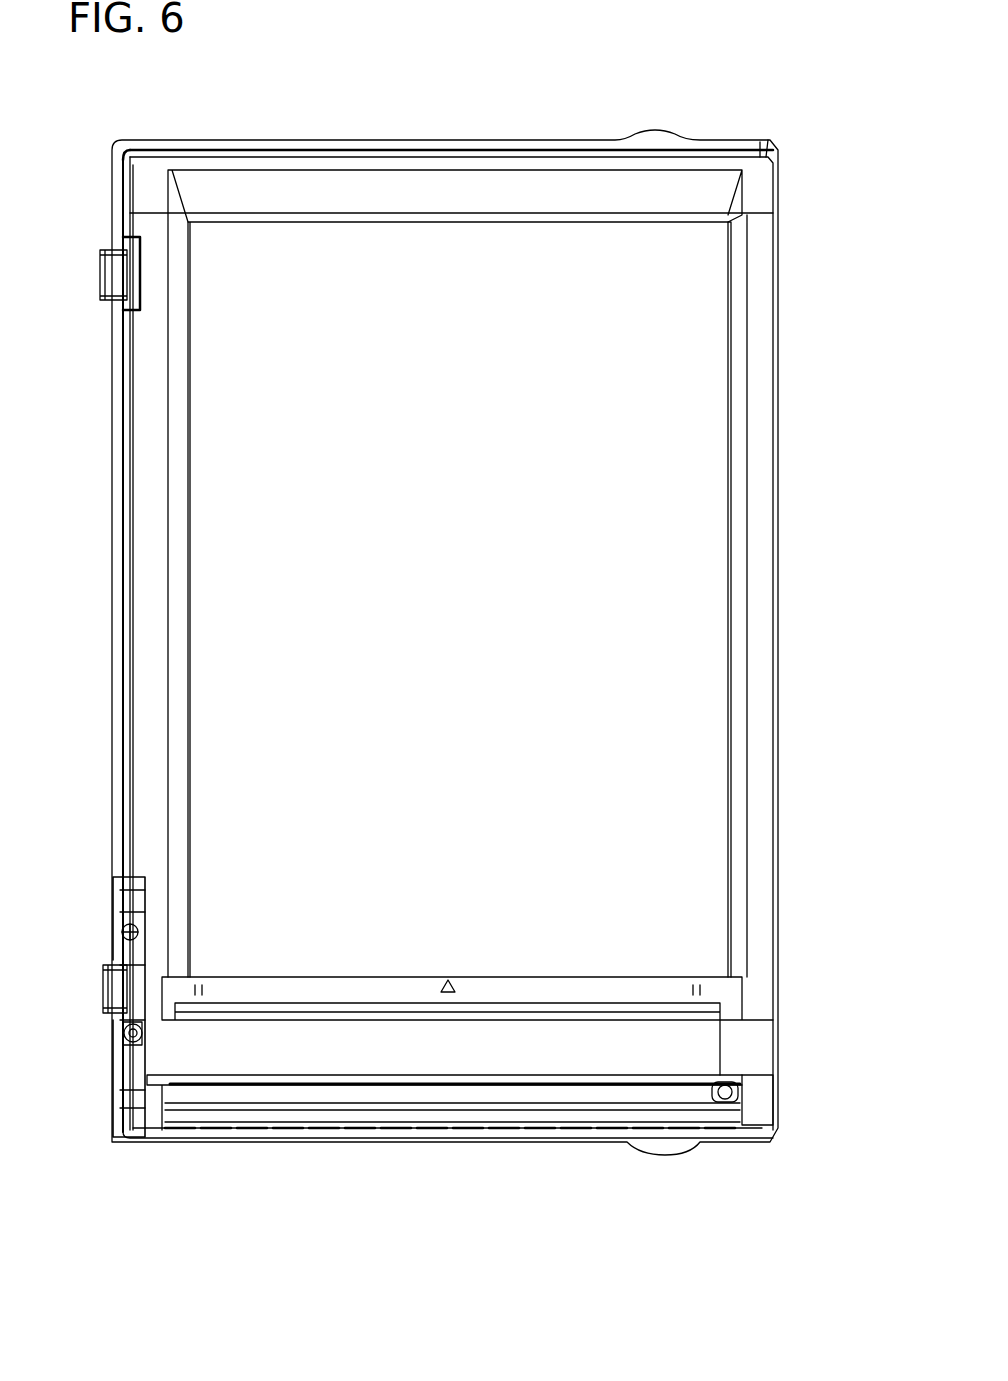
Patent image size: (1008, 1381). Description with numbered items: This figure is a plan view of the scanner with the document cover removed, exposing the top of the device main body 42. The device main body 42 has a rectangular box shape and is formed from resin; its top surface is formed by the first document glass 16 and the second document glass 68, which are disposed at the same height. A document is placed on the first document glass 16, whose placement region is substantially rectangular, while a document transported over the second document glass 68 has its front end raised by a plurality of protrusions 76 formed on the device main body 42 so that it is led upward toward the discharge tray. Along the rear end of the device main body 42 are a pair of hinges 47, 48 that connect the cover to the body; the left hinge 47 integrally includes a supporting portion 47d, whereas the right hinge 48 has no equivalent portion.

The first document glass 16 is at (675, 667).
The device main body 42 is at (757, 895).
The hinge 47 is at (112, 993).
The supporting portion 47d is at (133, 1047).
The hinge 48 is at (120, 273).
The second document glass 68 is at (678, 1062).
The protrusions 76 is at (325, 1087).